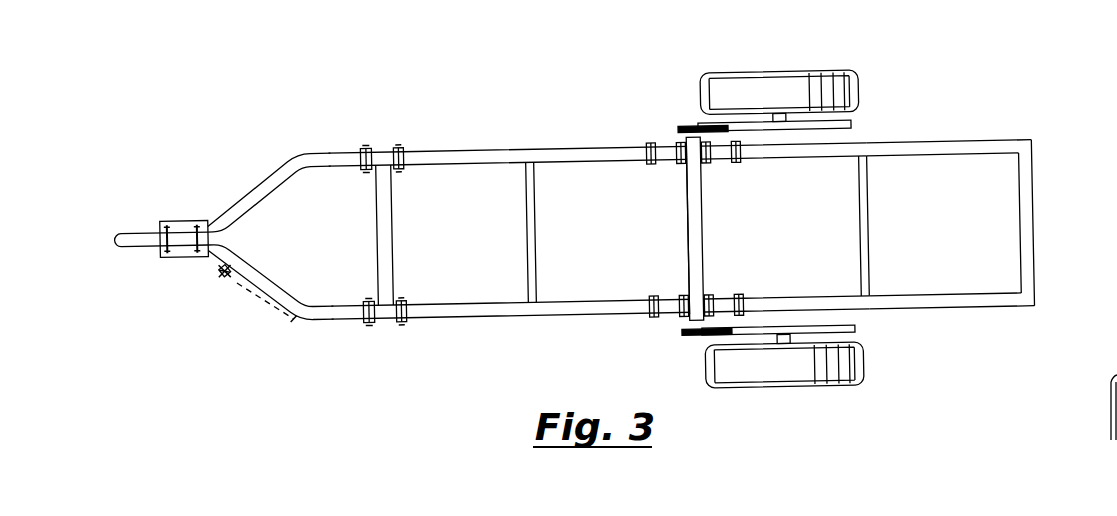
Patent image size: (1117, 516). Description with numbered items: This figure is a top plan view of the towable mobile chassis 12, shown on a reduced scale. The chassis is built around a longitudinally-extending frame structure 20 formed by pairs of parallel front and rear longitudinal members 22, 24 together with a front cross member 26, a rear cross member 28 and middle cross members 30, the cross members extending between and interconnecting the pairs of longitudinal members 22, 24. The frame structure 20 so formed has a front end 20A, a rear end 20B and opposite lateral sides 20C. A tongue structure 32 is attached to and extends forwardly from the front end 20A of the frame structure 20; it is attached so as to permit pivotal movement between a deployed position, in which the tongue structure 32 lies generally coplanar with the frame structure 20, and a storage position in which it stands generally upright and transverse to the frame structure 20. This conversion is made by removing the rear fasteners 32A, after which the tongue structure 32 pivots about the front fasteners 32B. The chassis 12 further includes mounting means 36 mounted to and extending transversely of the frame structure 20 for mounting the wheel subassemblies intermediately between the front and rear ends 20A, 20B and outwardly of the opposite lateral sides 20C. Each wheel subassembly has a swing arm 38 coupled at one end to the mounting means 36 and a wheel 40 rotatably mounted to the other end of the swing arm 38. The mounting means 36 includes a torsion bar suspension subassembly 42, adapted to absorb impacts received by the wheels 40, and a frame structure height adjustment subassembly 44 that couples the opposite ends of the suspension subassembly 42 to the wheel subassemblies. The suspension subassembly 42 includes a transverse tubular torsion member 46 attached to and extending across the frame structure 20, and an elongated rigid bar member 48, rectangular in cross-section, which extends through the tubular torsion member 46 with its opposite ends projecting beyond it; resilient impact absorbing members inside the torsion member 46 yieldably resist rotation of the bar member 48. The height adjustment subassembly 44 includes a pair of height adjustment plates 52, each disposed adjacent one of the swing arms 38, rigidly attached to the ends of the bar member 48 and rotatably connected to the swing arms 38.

The towable mobile chassis 12 is at (962, 130).
The frame structure 20 is at (980, 325).
The front end 20A is at (375, 233).
The rear end 20B is at (986, 232).
The opposite lateral sides 20C is at (907, 150).
The front longitudinal members 22 is at (662, 236).
The rear longitudinal members 24 is at (997, 143).
The front cross member 26 is at (380, 255).
The rear cross member 28 is at (1026, 201).
The middle cross members 30 is at (529, 226).
The tongue structure 32 is at (272, 156).
The rear fasteners 32A is at (398, 150).
The front fasteners 32B is at (368, 150).
The mounting means 36 is at (858, 235).
The swing arm 38 is at (746, 122).
The wheel 40 is at (833, 80).
The torsion bar suspension subassembly 42 is at (715, 210).
The frame structure height adjustment subassembly 44 is at (738, 132).
The transverse tubular torsion member 46 is at (688, 233).
The elongated rigid bar member 48 is at (690, 137).
The height adjustment plates 52 is at (692, 125).